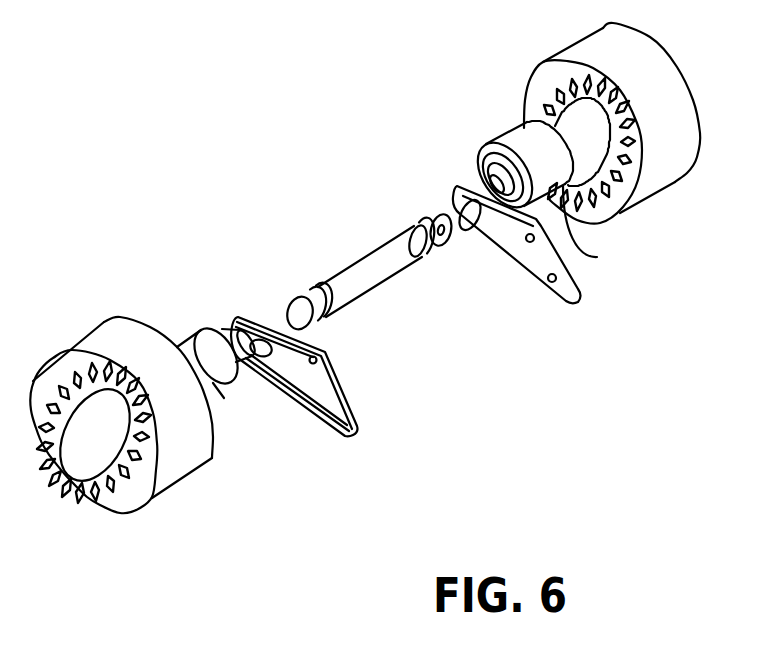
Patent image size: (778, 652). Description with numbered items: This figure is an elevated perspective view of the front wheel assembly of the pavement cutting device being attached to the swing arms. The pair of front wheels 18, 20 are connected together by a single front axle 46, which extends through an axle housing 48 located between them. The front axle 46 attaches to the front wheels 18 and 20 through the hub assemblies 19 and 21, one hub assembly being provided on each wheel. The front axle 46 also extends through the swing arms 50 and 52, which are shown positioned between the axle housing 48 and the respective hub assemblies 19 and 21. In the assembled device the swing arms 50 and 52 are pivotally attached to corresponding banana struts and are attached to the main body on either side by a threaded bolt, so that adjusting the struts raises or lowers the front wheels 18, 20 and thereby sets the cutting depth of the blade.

The front wheel 18 is at (675, 182).
The hub assembly 19 is at (597, 257).
The front wheel 20 is at (91, 328).
The hub assembly 21 is at (216, 400).
The front axle 46 is at (247, 318).
The axle housing 48 is at (335, 274).
The swing arm 50 is at (580, 303).
The swing arm 52 is at (367, 430).